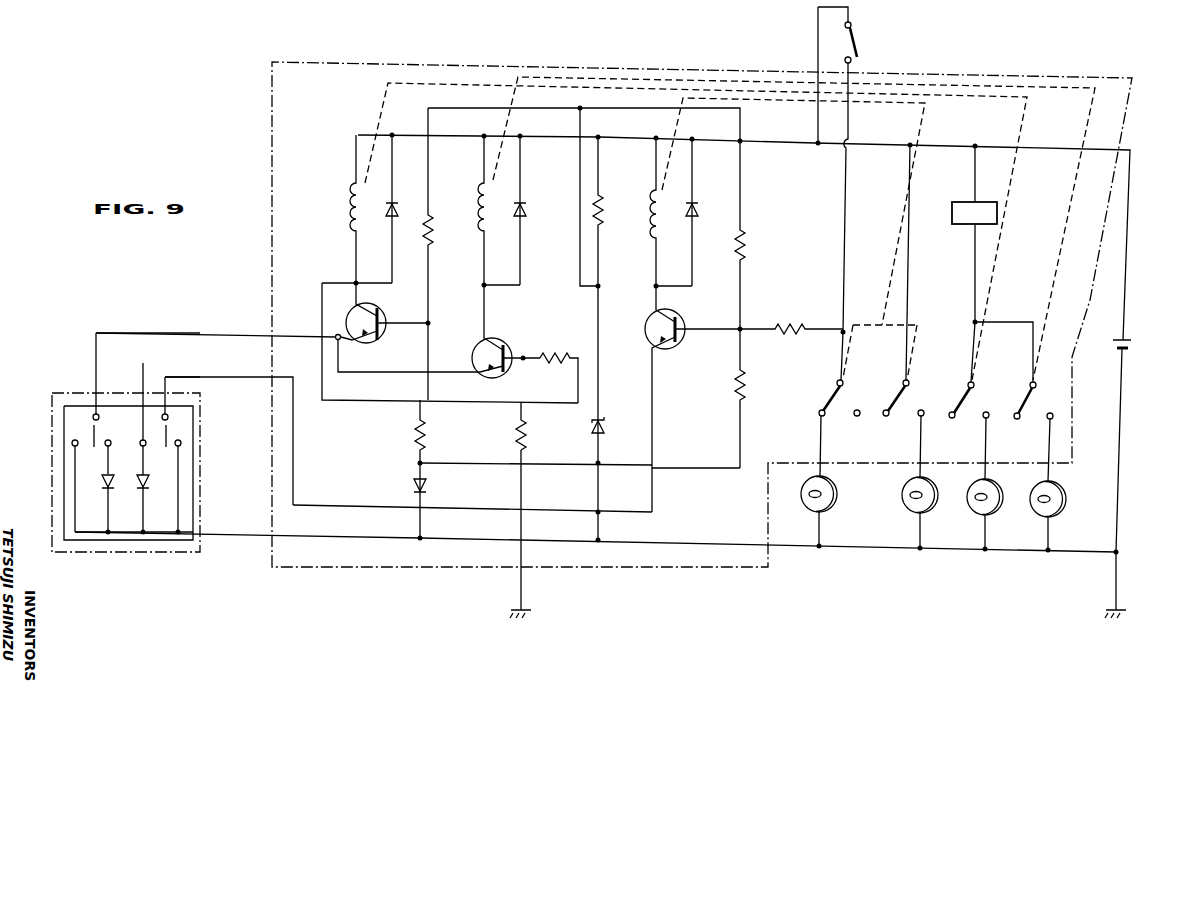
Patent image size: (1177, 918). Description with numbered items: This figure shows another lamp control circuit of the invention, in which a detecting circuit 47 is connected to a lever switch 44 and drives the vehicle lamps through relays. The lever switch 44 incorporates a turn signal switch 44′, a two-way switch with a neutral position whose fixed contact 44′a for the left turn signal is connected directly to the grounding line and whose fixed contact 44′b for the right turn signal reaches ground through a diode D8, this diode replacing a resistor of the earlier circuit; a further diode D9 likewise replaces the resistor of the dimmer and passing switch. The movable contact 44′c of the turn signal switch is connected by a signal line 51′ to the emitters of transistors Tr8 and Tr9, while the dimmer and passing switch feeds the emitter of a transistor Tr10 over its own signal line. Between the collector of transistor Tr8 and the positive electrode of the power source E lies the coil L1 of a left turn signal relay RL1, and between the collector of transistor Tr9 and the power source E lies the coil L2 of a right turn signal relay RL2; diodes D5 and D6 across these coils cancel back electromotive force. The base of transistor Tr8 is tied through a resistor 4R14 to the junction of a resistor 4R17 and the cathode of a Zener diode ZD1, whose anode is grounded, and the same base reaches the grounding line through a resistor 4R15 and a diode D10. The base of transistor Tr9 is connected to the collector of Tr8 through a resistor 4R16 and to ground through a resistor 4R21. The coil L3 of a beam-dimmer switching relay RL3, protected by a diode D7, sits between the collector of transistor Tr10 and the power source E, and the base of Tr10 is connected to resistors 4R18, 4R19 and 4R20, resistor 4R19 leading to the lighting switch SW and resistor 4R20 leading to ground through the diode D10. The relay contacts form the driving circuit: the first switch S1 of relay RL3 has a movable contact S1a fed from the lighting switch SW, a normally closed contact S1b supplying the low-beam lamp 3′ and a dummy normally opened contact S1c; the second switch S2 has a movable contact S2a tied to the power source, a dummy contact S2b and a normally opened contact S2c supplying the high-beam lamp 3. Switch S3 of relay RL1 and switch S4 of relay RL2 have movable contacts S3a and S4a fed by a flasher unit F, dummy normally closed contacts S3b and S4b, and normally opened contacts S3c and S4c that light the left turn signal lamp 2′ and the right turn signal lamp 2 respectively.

The detecting circuit 47 is at (340, 60).
The left turn signal relay RL1 is at (452, 83).
The right turn signal relay RL2 is at (615, 77).
The beam-dimmer switching relay RL3 is at (762, 98).
The lighting switch SW is at (858, 42).
The coil of left turn signal relay L1 is at (348, 200).
The coil of right turn signal relay L2 is at (476, 203).
The coil of beam-dimmer switching relay L3 is at (655, 219).
The diode D5 is at (398, 203).
The diode D6 is at (529, 210).
The diode D7 is at (698, 212).
The diode D8 is at (105, 490).
The diode D9 is at (150, 481).
The diode D10 is at (428, 487).
The Zener diode ZD1 is at (590, 432).
The resistor 4R14 is at (431, 240).
The resistor 4R15 is at (415, 432).
The resistor 4R16 is at (549, 352).
The resistor 4R17 is at (604, 205).
The resistor 4R18 is at (748, 246).
The resistor 4R19 is at (790, 326).
The resistor 4R20 is at (734, 390).
The resistor 4R21 is at (516, 432).
The transistor Tr8 is at (384, 327).
The transistor Tr9 is at (483, 342).
The transistor Tr10 is at (683, 316).
The flasher unit F is at (962, 201).
The power source E is at (1128, 345).
The first switch S1 is at (841, 398).
The movable contact S1a is at (837, 381).
The normally closed fixed contact S1b is at (819, 414).
The normally opened fixed contact S1c is at (856, 416).
The second switch S2 is at (904, 398).
The movable contact S2a is at (903, 381).
The normally closed fixed contact S2b is at (885, 417).
The normally opened fixed contact S2c is at (922, 410).
The switch S3 is at (970, 401).
The movable contact S3a is at (968, 381).
The normally closed fixed contact S3b is at (944, 431).
The normally opened fixed contact S3c is at (988, 411).
The switch S4 is at (1037, 401).
The movable contact S4a is at (1031, 381).
The normally closed fixed contact S4b is at (1011, 431).
The normally opened fixed contact S4c is at (1054, 417).
The low-beam lamp 3′ is at (812, 510).
The high-beam lamp 3 is at (913, 510).
The right turn signal lamp 2 is at (991, 511).
The left turn signal lamp 2′ is at (1062, 512).
The signal line 51′ is at (233, 333).
The lever switch 44 is at (52, 522).
The turn signal switch 44′ is at (63, 481).
The fixed contact 44′a is at (71, 444).
The fixed contact 44′b is at (110, 440).
The movable contact 44′c is at (93, 427).